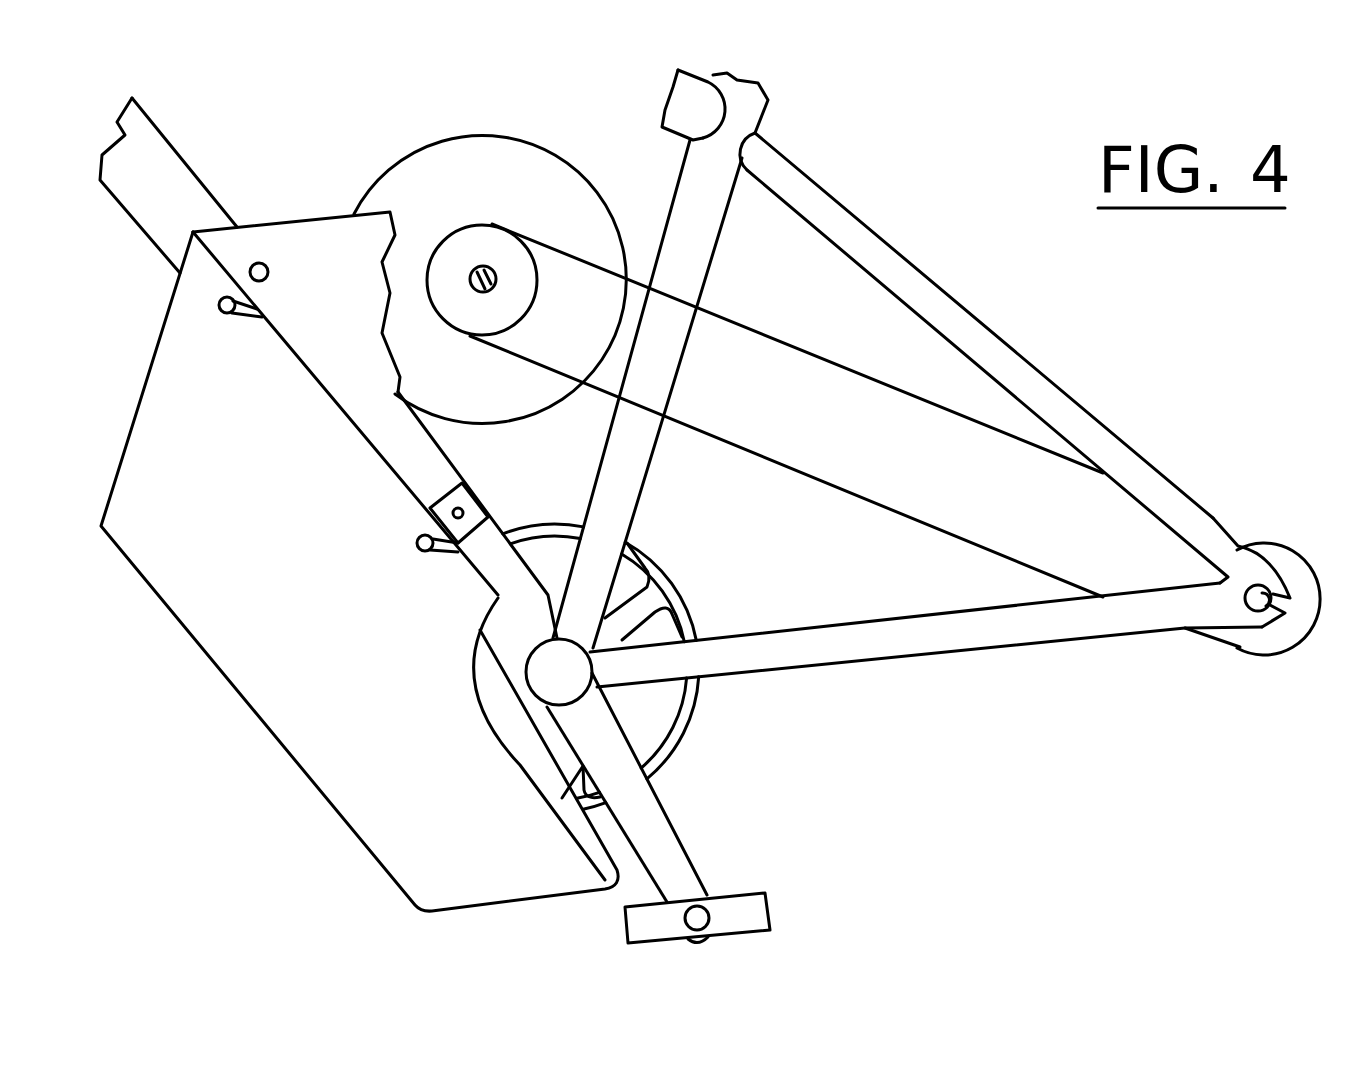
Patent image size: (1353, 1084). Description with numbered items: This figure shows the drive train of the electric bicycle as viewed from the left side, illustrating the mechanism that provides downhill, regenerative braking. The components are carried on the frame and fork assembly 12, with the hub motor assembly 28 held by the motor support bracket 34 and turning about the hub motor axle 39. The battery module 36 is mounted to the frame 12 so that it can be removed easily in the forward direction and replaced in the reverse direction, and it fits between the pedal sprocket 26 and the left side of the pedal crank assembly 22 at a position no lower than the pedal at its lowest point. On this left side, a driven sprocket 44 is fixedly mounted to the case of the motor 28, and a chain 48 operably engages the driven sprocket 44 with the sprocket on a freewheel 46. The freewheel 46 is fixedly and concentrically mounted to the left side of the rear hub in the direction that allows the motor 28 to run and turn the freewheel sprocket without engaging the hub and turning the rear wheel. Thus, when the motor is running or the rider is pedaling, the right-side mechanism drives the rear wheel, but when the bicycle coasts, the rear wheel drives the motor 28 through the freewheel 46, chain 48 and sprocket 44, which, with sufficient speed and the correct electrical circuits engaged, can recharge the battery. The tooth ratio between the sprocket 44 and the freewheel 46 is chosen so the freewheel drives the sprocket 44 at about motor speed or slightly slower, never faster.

The frame and fork assembly 12 is at (835, 217).
The pedal crank assembly 22 is at (678, 877).
The pedal sprocket 26 is at (677, 738).
The hub motor assembly 28 is at (560, 203).
The motor support bracket 34 is at (312, 238).
The battery module 36 is at (278, 517).
The hub motor axle 39 is at (484, 270).
The driven sprocket 44 is at (460, 252).
The freewheel 46 is at (1268, 645).
The chain 48 is at (810, 478).